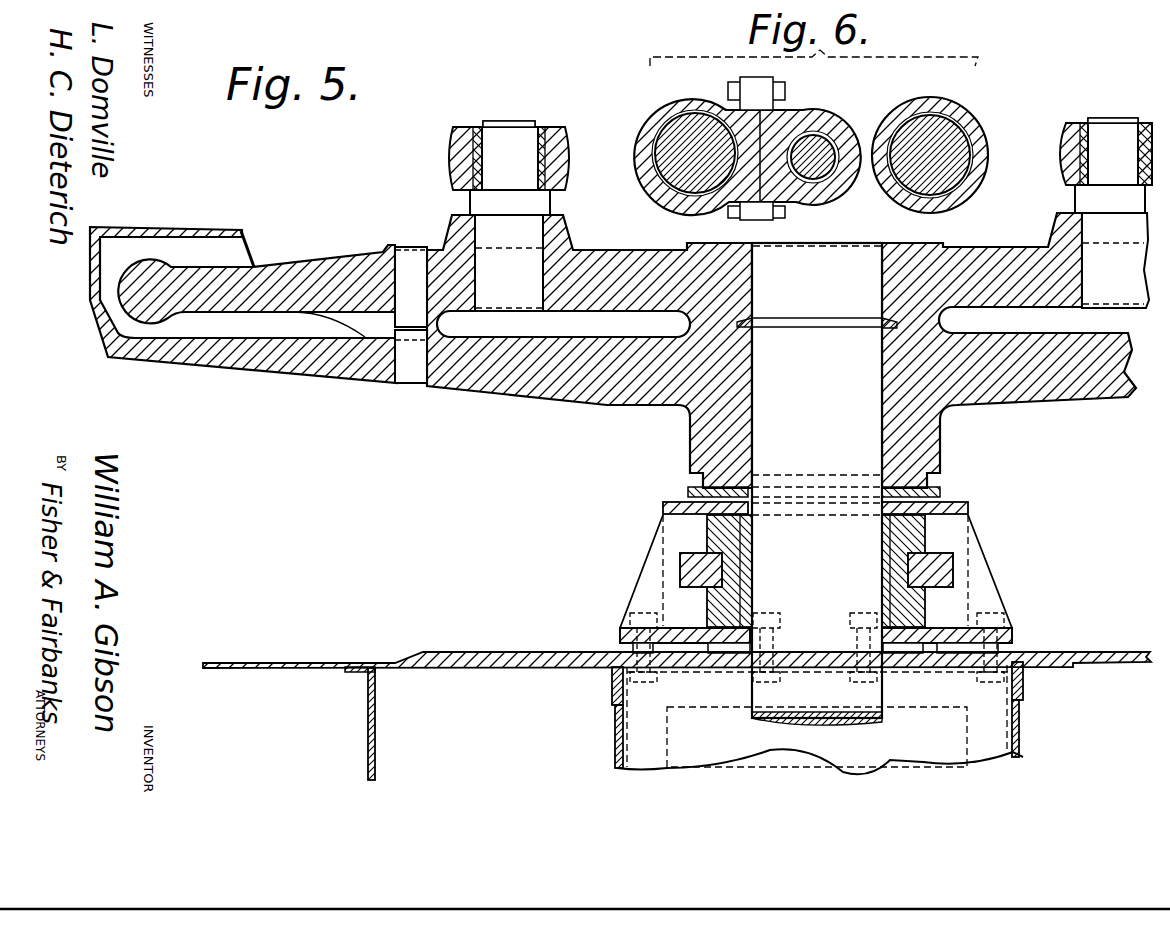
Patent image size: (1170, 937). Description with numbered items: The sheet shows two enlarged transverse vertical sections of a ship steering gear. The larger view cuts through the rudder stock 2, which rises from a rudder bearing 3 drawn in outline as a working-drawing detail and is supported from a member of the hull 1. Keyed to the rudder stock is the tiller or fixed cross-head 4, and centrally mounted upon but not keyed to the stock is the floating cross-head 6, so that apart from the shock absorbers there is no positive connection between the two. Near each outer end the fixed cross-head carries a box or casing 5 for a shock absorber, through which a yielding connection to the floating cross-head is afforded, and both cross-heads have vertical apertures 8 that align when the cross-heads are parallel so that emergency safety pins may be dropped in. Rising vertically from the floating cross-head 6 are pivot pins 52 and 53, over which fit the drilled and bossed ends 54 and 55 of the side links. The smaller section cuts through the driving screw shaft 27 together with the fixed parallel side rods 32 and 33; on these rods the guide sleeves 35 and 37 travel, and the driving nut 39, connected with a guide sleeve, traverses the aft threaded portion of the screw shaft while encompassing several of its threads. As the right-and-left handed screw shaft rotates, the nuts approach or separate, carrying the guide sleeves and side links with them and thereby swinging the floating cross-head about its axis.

In FIG. 5, the hull member 1 is at (393, 630).
In FIG. 5, the rudder stock 2 is at (817, 484).
In FIG. 5, the rudder bearing 3 is at (816, 584).
In FIG. 5, the fixed cross-head 4 is at (547, 384).
In FIG. 5, the box or casing 5 is at (232, 248).
In FIG. 5, the floating cross-head 6 is at (315, 272).
In FIG. 5, the vertical apertures 8 is at (411, 315).
In FIG. 6, the driving screw shaft 27 is at (813, 153).
In FIG. 6, the side rod 32 is at (955, 162).
In FIG. 6, the side rod 33 is at (670, 161).
In FIG. 6, the guide sleeve 35 is at (967, 130).
In FIG. 6, the guide sleeve 37 is at (653, 126).
In FIG. 6, the driving nut 39 is at (835, 120).
In FIG. 5, the pivot pin 52 is at (1107, 135).
In FIG. 5, the pivot pin 53 is at (503, 140).
In FIG. 5, the drilled and bossed end 54 is at (1068, 148).
In FIG. 5, the drilled and bossed end 55 is at (456, 158).